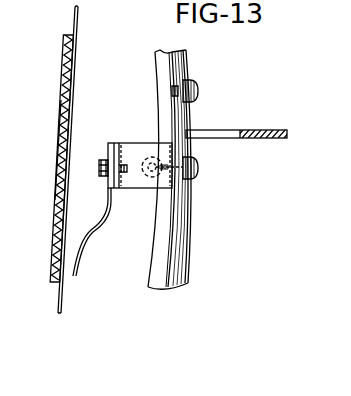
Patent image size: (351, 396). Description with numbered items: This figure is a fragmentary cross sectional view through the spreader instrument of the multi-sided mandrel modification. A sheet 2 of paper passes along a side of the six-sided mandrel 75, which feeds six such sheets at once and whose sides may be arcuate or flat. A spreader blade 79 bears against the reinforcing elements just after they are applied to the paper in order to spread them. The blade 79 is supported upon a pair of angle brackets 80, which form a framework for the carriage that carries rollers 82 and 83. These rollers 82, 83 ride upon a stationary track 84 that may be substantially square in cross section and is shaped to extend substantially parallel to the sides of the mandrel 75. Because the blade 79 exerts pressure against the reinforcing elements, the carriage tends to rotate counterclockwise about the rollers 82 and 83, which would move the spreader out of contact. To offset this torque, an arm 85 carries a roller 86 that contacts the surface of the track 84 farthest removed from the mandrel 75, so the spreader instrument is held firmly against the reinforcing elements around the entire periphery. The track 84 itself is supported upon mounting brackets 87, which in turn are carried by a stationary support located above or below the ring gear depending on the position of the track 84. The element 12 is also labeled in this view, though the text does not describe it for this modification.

The slat 2 is at (72, 33).
The slat edge strip 12 is at (62, 311).
The slat body 75 is at (62, 213).
The wire 79 is at (84, 256).
The bracket 80 is at (137, 188).
The knurled knob 82 is at (199, 167).
The hidden bolt 83 is at (147, 157).
The curved strip 84 is at (184, 230).
The plate 85 is at (175, 118).
The knurled knob 86 is at (198, 88).
The bar 87 is at (265, 129).